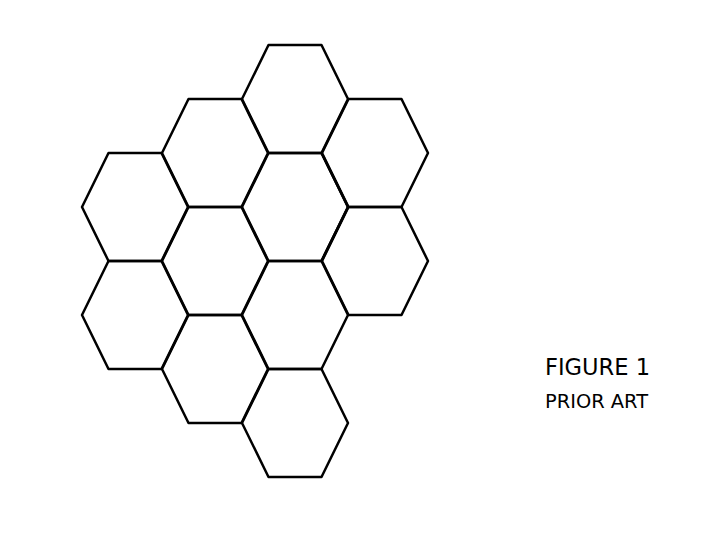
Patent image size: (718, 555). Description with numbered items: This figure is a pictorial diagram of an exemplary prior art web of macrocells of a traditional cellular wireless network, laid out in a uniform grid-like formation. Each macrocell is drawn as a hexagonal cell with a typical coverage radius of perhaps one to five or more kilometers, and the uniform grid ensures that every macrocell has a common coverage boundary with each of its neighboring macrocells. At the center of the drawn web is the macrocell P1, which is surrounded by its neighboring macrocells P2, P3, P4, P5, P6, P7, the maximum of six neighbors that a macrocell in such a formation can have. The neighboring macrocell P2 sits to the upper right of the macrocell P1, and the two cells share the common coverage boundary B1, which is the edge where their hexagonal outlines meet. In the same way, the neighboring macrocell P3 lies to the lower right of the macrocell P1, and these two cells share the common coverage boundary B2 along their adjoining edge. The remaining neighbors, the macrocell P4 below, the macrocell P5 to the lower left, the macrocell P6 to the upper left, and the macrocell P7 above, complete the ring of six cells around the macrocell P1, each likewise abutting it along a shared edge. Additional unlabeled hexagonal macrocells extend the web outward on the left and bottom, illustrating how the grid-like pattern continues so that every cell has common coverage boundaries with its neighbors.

The macrocell P1 is at (295, 207).
The neighboring macrocell P2 is at (375, 153).
The neighboring macrocell P3 is at (375, 261).
The neighboring macrocell P4 is at (295, 315).
The neighboring macrocell P5 is at (215, 261).
The neighboring macrocell P6 is at (215, 153).
The neighboring macrocell P7 is at (295, 99).
The common coverage boundary B1 is at (356, 176).
The common coverage boundary B2 is at (344, 254).